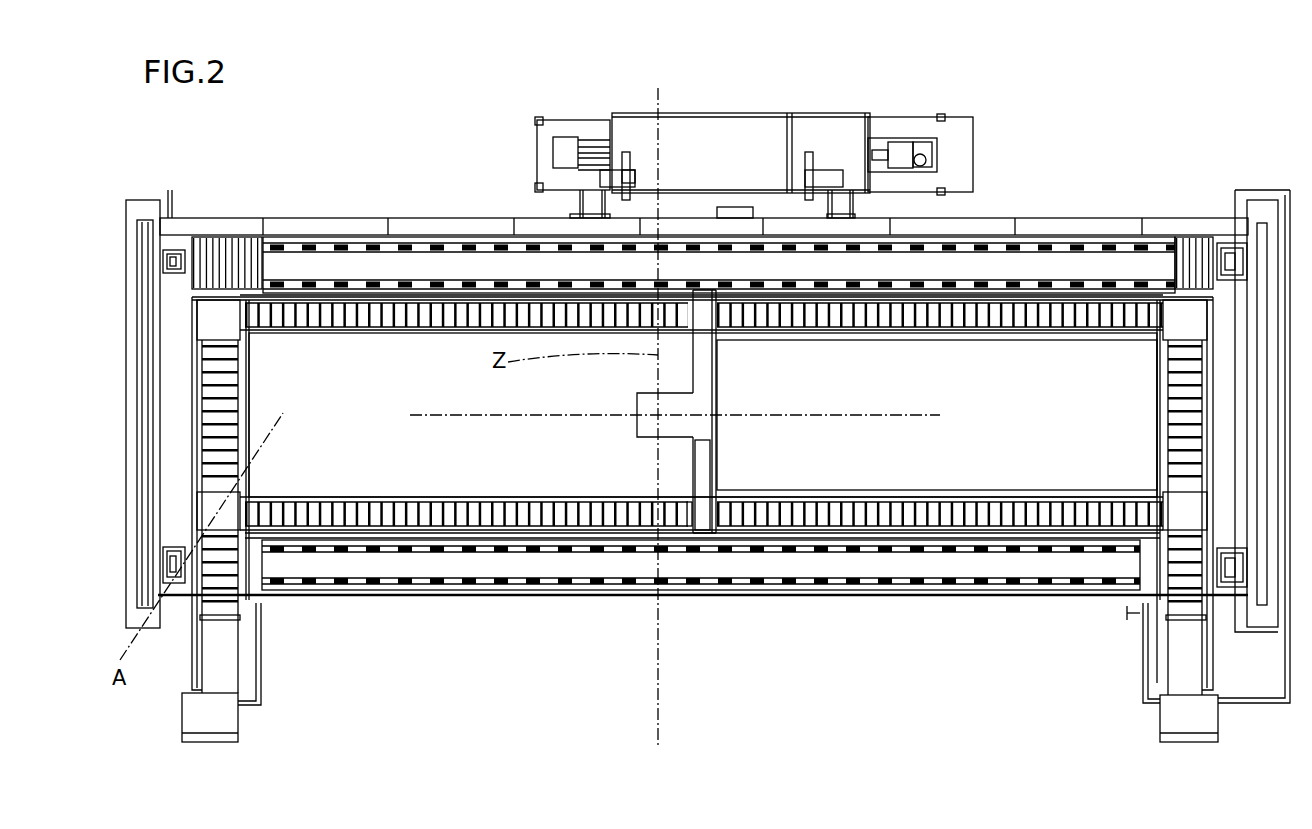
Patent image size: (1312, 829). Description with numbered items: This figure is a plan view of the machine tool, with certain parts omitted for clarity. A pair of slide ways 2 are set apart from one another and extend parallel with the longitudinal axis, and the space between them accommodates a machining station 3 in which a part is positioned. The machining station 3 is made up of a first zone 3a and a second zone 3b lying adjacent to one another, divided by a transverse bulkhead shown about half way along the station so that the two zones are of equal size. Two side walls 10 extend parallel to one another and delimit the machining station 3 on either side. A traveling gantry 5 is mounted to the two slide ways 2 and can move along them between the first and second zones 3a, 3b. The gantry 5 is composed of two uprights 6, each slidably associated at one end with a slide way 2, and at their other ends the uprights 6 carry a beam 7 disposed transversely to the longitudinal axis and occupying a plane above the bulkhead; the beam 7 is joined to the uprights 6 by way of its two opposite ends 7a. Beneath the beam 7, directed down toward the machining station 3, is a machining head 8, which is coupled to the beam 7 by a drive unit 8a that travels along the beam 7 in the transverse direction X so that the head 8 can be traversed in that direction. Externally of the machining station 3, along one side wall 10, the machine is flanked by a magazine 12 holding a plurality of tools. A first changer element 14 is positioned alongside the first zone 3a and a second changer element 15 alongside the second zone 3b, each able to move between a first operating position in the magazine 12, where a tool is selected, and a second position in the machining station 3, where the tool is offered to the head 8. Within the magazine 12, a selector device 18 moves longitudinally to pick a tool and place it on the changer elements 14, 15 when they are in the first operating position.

The slide ways 2 is at (995, 318).
The machining station 3 is at (410, 456).
The first zone 3a is at (308, 464).
The second zone 3b is at (1058, 445).
The traveling gantry 5 is at (717, 432).
The uprights 6 is at (703, 313).
The beam 7 is at (692, 460).
The opposite ends of the beam 7a is at (698, 378).
The machining head 8 is at (637, 413).
The drive unit 8a is at (695, 415).
The side walls 10 is at (333, 598).
The magazine 12 is at (515, 167).
The first changer element 14 is at (833, 167).
The second changer element 15 is at (603, 170).
The selector device 18 is at (905, 135).